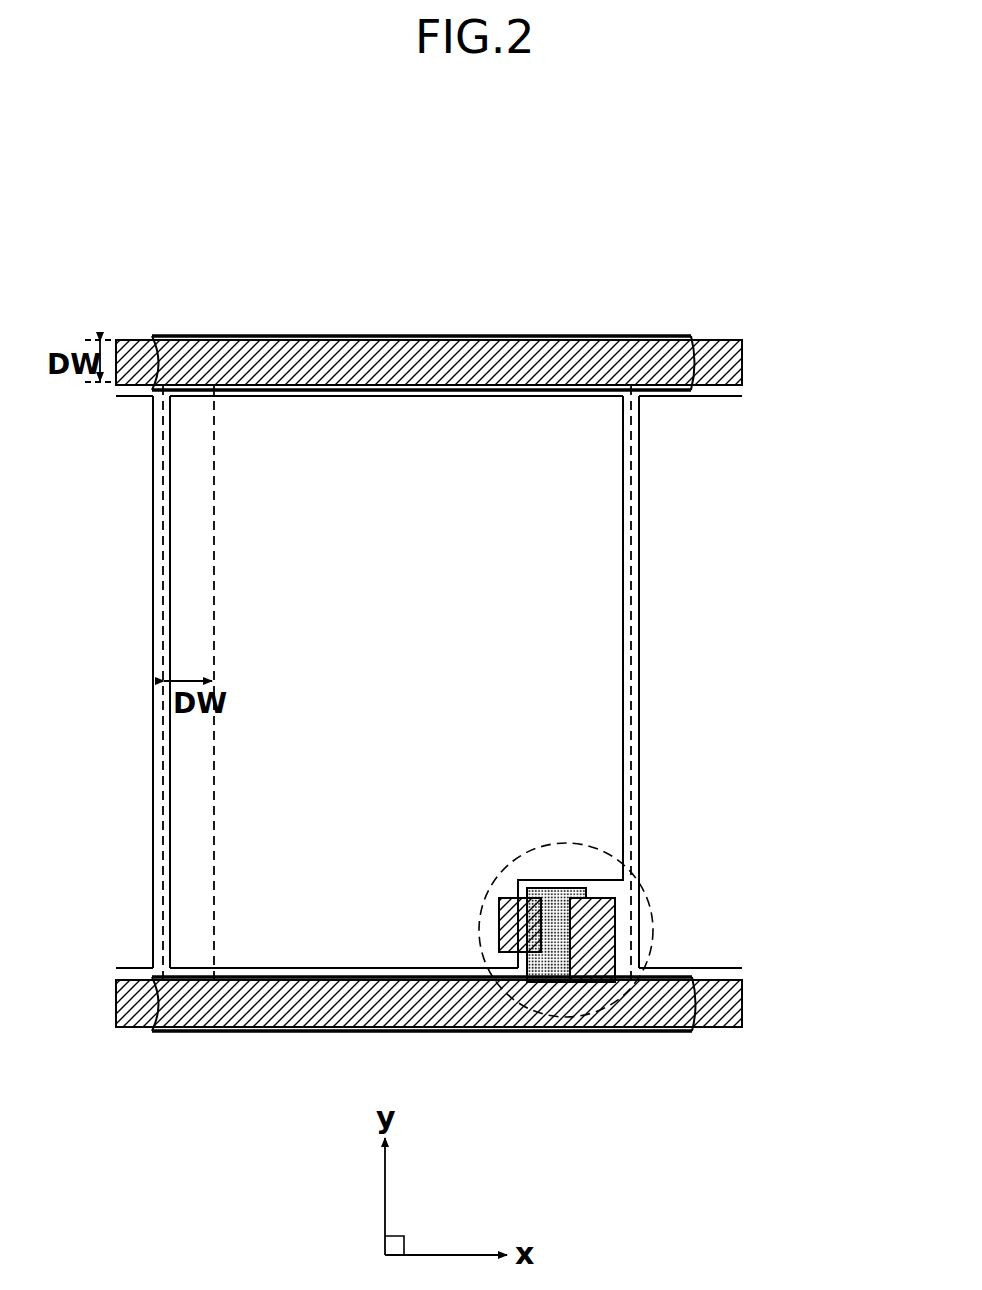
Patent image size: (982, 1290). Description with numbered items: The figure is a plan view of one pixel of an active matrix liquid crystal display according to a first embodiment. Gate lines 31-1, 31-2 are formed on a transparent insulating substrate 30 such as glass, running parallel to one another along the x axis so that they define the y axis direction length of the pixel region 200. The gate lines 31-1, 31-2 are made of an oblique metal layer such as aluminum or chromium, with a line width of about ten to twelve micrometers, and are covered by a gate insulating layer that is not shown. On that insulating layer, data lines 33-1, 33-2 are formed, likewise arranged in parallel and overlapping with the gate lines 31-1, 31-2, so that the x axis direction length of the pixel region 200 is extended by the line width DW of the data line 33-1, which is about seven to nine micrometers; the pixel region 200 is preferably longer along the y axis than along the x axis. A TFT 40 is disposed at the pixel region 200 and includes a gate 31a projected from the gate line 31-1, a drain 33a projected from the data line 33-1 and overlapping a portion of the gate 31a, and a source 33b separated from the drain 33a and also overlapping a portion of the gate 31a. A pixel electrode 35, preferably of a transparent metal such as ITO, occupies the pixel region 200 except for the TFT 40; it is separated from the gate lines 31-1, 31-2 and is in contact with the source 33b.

The transparent insulating substrate 30 is at (428, 250).
The gate line 31-1 is at (648, 1033).
The gate line 31-2 is at (620, 338).
The gate 31a is at (557, 935).
The data line 33-1 is at (742, 1005).
The data line 33-2 is at (742, 364).
The drain 33a is at (602, 947).
The source 33b is at (512, 935).
The pixel electrode 35 is at (611, 610).
The TFT 40 is at (650, 903).
The pixel region 200 is at (631, 489).